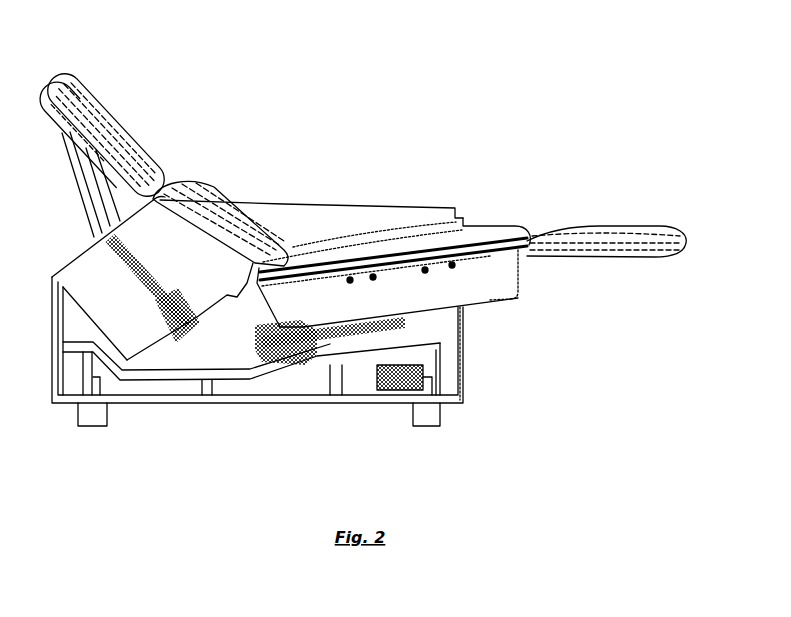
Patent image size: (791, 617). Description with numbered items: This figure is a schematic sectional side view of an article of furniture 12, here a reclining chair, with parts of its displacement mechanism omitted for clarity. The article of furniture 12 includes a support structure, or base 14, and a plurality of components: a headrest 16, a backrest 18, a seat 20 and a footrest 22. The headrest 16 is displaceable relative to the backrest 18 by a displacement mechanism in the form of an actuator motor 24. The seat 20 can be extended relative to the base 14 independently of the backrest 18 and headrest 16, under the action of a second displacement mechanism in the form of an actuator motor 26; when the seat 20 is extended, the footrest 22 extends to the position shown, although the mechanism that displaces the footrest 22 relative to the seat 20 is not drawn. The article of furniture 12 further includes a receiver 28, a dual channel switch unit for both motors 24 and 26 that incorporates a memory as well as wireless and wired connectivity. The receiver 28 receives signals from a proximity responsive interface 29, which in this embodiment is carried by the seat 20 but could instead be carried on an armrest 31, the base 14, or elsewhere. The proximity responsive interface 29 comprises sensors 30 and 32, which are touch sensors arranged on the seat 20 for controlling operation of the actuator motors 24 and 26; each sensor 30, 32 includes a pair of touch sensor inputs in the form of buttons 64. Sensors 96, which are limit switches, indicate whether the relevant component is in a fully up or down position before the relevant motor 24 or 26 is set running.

The article of furniture 12 is at (392, 112).
The base 14 is at (442, 352).
The headrest 16 is at (108, 112).
The backrest 18 is at (220, 200).
The seat 20 is at (503, 230).
The footrest 22 is at (603, 228).
The actuator motor 24 is at (165, 320).
The actuator motor 26 is at (290, 357).
The receiver 28 is at (393, 367).
The proximity responsive interface 29 is at (412, 300).
The sensor 30 is at (363, 278).
The armrest 31 is at (283, 204).
The sensor 32 is at (440, 268).
The buttons 64 is at (373, 277).
The sensors 96 is at (170, 290).